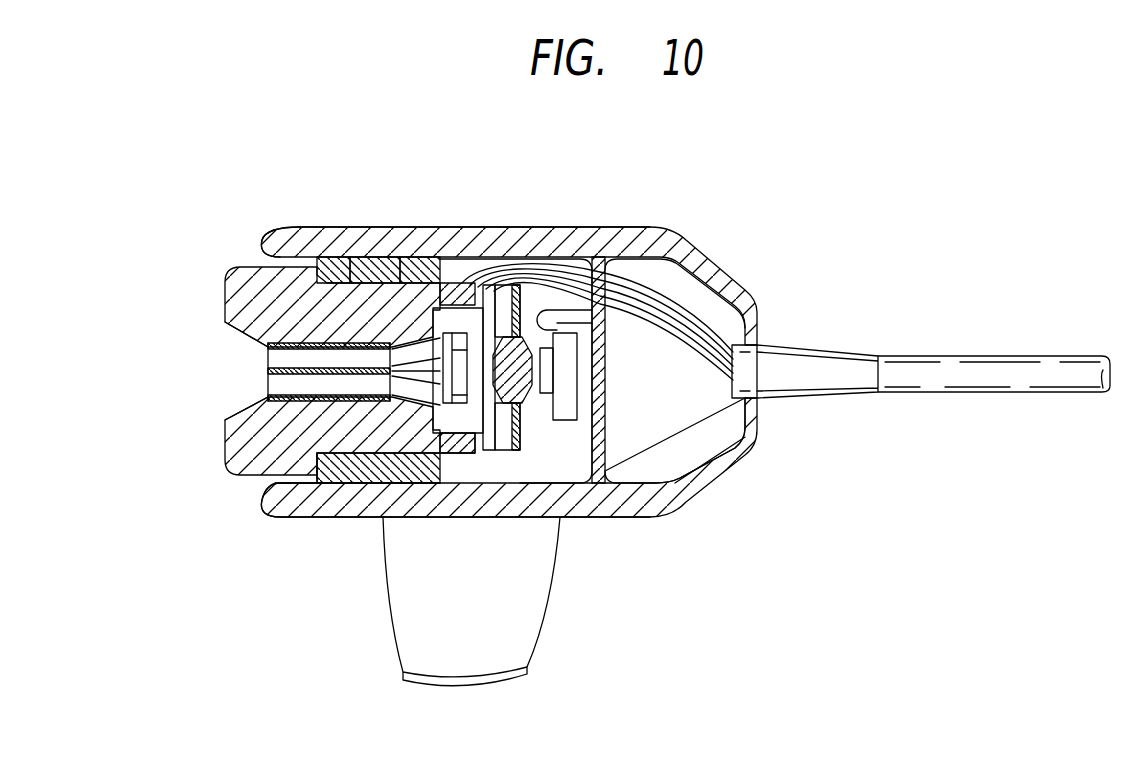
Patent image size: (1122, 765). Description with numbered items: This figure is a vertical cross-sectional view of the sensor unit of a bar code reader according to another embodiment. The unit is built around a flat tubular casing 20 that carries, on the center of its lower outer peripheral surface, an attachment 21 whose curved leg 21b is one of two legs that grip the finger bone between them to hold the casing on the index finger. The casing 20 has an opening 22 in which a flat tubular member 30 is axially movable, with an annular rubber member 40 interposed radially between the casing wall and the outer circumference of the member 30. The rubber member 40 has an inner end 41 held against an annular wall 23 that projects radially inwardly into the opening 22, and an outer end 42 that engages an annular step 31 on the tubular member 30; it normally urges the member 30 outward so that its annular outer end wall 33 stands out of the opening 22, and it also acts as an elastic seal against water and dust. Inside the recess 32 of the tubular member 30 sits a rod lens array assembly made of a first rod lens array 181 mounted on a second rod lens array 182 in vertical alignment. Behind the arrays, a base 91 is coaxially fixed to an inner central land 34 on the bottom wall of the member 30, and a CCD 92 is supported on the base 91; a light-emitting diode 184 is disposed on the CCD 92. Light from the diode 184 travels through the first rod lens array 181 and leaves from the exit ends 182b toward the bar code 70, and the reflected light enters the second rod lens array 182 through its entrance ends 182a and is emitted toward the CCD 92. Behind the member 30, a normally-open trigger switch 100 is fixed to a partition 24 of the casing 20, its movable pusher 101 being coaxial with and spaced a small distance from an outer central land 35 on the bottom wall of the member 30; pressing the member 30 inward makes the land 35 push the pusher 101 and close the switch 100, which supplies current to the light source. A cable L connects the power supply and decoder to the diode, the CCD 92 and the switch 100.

The flat tubular casing 20 is at (514, 228).
The attachment 21 is at (396, 622).
The curved leg 21b is at (548, 612).
The opening 22 is at (275, 250).
The annular wall 23 is at (448, 283).
The partition 24 is at (601, 411).
The flat tubular member 30 is at (263, 482).
The annular step 31 is at (283, 509).
The recess 32 is at (419, 484).
The annular outer end wall 33 is at (237, 449).
The inner central land 34 is at (500, 386).
The outer central land 35 is at (530, 394).
The annular rubber member 40 is at (361, 270).
The inner end 41 is at (408, 270).
The outer end 42 is at (323, 270).
The bar code 70 is at (268, 386).
The base 91 is at (478, 290).
The charge-coupled device (CCD) 92 is at (454, 484).
The trigger switch 100 is at (578, 414).
The movable pusher 101 is at (549, 368).
The first rod lens array 181 is at (267, 327).
The second rod lens array 182 is at (338, 484).
The entrance ends 182a is at (268, 392).
The exit ends 182b is at (243, 340).
The light-emitting diode 184 is at (455, 332).
The cable L is at (1002, 380).